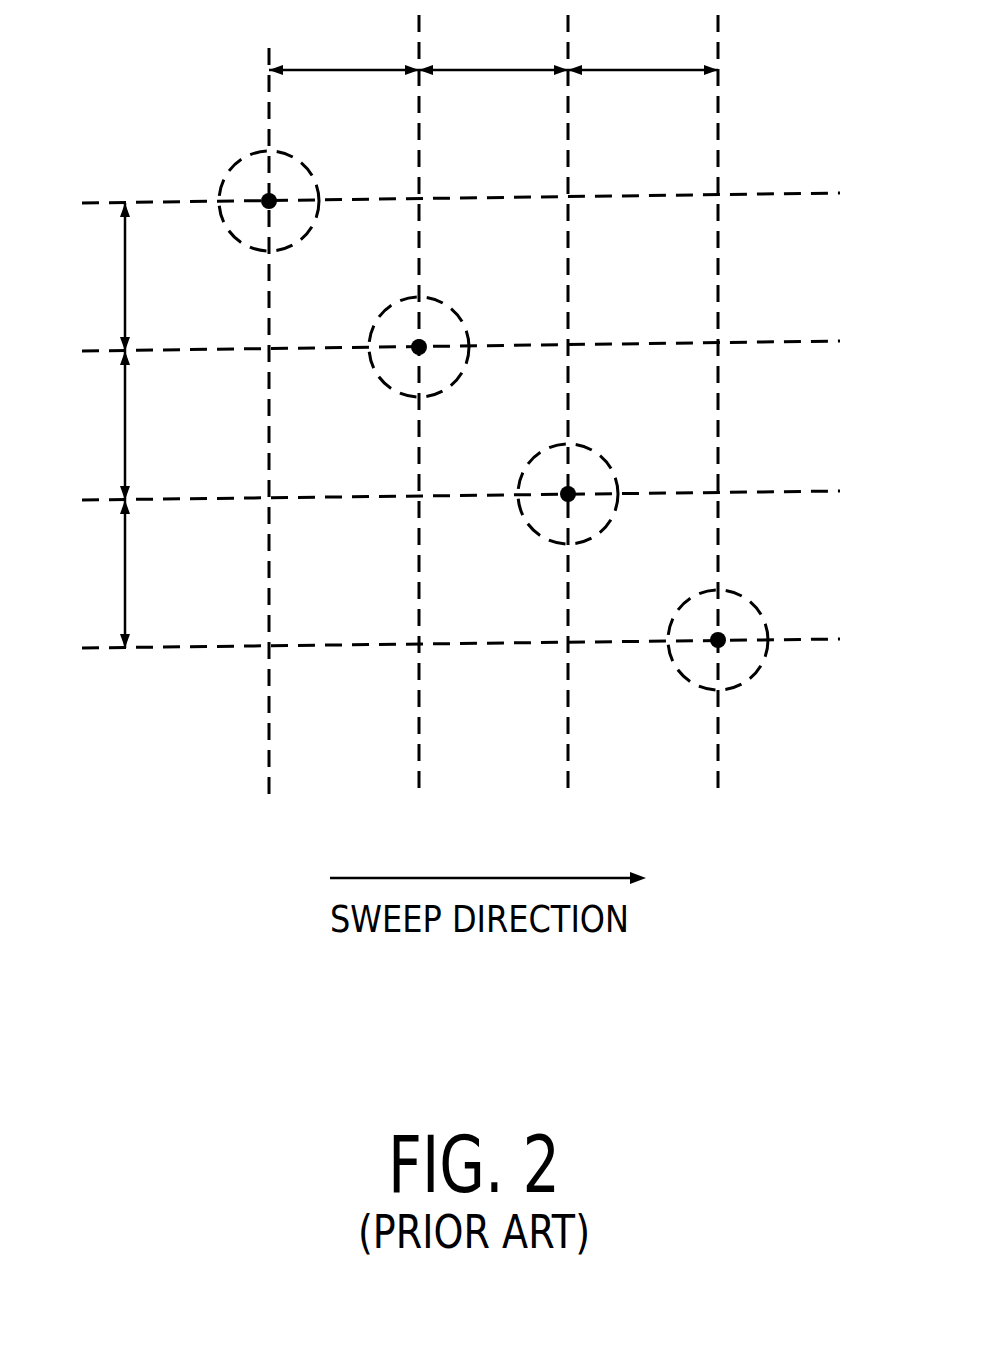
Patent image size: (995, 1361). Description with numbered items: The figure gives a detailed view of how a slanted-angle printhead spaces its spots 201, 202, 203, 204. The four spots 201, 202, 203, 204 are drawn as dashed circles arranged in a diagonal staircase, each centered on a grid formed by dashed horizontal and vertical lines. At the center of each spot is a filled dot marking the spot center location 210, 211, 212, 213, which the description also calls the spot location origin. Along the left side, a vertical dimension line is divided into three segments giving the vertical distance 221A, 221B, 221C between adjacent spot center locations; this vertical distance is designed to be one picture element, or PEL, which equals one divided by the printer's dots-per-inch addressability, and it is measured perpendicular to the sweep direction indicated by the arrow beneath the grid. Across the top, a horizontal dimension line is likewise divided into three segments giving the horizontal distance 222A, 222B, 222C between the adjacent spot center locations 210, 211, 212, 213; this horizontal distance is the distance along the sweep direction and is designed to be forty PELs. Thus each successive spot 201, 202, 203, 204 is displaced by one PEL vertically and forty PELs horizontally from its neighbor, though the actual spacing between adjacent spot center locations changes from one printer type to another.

The spot 201 is at (294, 167).
The spot 202 is at (446, 311).
The spot 203 is at (594, 458).
The spot 204 is at (747, 605).
The spot center location 210 is at (262, 212).
The spot center location 211 is at (414, 357).
The spot center location 212 is at (562, 505).
The spot center location 213 is at (714, 651).
The vertical distance 221A is at (124, 264).
The vertical distance 221B is at (124, 424).
The vertical distance 221C is at (124, 562).
The horizontal distance 222A is at (304, 70).
The horizontal distance 222B is at (508, 42).
The horizontal distance 222C is at (620, 70).